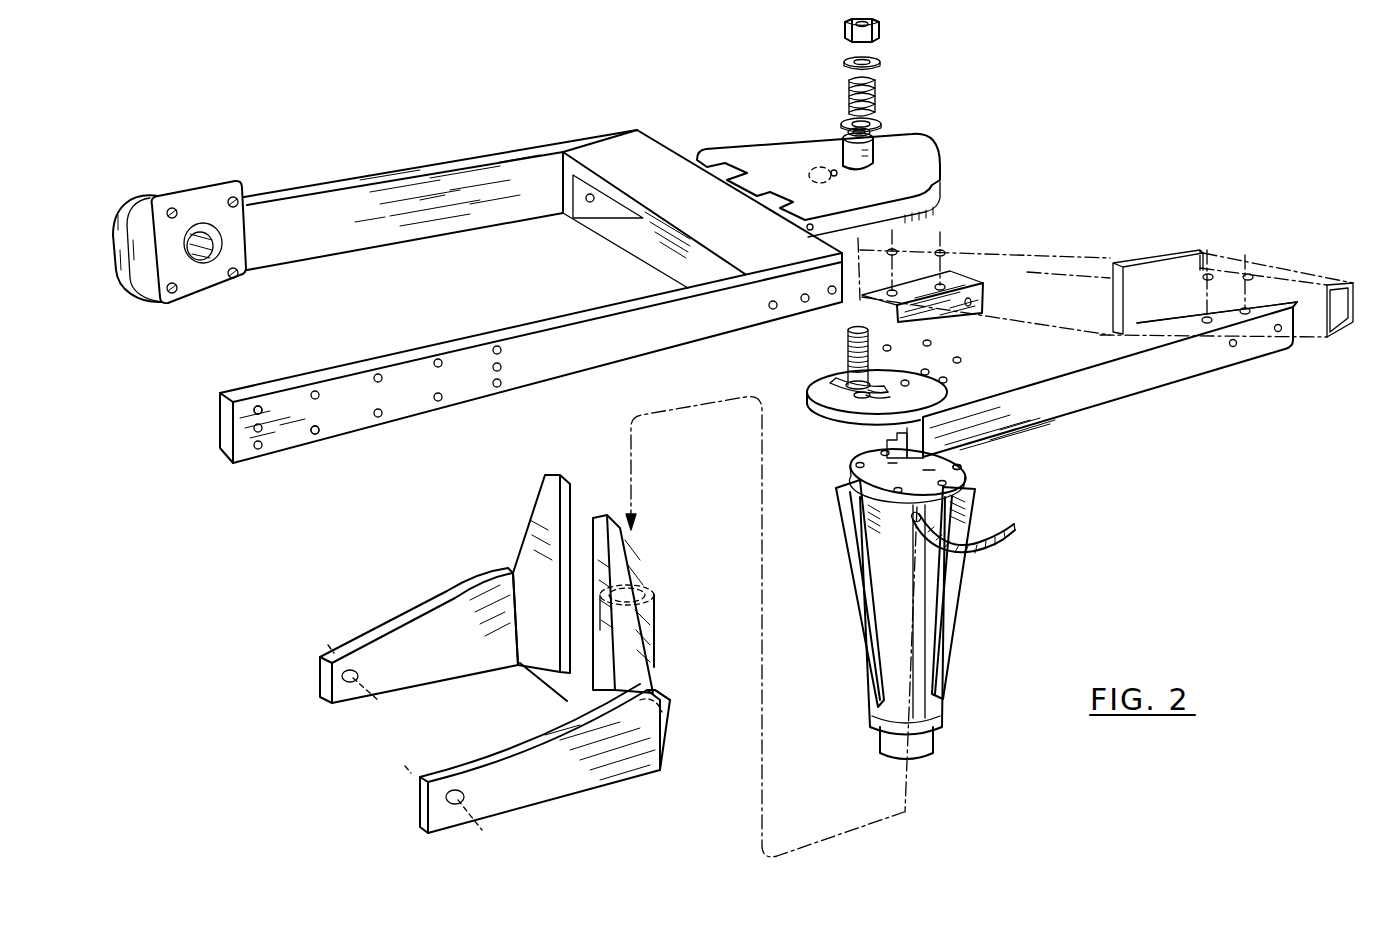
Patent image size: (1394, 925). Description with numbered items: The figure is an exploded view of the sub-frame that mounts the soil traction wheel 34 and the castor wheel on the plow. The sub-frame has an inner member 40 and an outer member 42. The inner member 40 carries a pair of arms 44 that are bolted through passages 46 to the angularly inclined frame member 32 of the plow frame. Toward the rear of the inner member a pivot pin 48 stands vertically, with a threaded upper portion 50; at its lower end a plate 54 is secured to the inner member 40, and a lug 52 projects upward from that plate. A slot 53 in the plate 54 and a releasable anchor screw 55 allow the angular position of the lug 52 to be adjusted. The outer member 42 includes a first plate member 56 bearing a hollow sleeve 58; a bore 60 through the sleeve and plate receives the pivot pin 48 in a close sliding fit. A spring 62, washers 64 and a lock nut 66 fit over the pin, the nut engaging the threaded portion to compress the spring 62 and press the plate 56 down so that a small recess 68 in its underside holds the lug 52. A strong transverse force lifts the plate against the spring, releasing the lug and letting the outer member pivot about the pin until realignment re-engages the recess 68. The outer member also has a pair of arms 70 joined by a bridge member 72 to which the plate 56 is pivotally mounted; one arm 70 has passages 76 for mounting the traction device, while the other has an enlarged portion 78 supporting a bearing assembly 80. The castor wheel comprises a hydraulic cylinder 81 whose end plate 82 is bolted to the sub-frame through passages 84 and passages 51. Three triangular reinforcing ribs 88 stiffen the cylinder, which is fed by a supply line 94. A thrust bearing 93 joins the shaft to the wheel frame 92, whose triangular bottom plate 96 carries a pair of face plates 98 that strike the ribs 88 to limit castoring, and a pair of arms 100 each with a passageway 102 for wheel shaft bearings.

The frame member 32 is at (1027, 258).
The soil traction wheel 34 is at (504, 127).
The inner member 40 is at (1090, 386).
The outer member 42 is at (598, 154).
The arms 44 is at (952, 282).
The passages 46 is at (940, 285).
The pivot pin 48 is at (850, 366).
The threaded upper portion 50 is at (856, 367).
The passages 51 is at (960, 360).
The lug 52 is at (840, 379).
The slot 53 is at (857, 395).
The plate 54 is at (876, 380).
The anchor screw 55 is at (890, 392).
The first plate member 56 is at (776, 150).
The hollow sleeve 58 is at (878, 146).
The bore 60 is at (872, 134).
The spring 62 is at (878, 96).
The washers 64 is at (882, 61).
The lock nut 66 is at (882, 30).
The recess 68 is at (806, 177).
The arms 70 is at (412, 188).
The bridge member 72 is at (668, 196).
The passages 76 is at (315, 434).
The enlarged portion 78 is at (213, 200).
The bearing assembly 80 is at (188, 156).
The hydraulic cylinder 81 is at (922, 712).
The end plate 82 is at (950, 478).
The passages 84 is at (960, 467).
The reinforcing ribs 88 is at (866, 548).
The wheel frame 92 is at (517, 662).
The thrust bearing 93 is at (661, 725).
The supply line 94 is at (985, 548).
The bottom plate 96 is at (657, 690).
The face plates 98 is at (545, 512).
The arms 100 is at (415, 620).
The passageway 102 is at (457, 795).